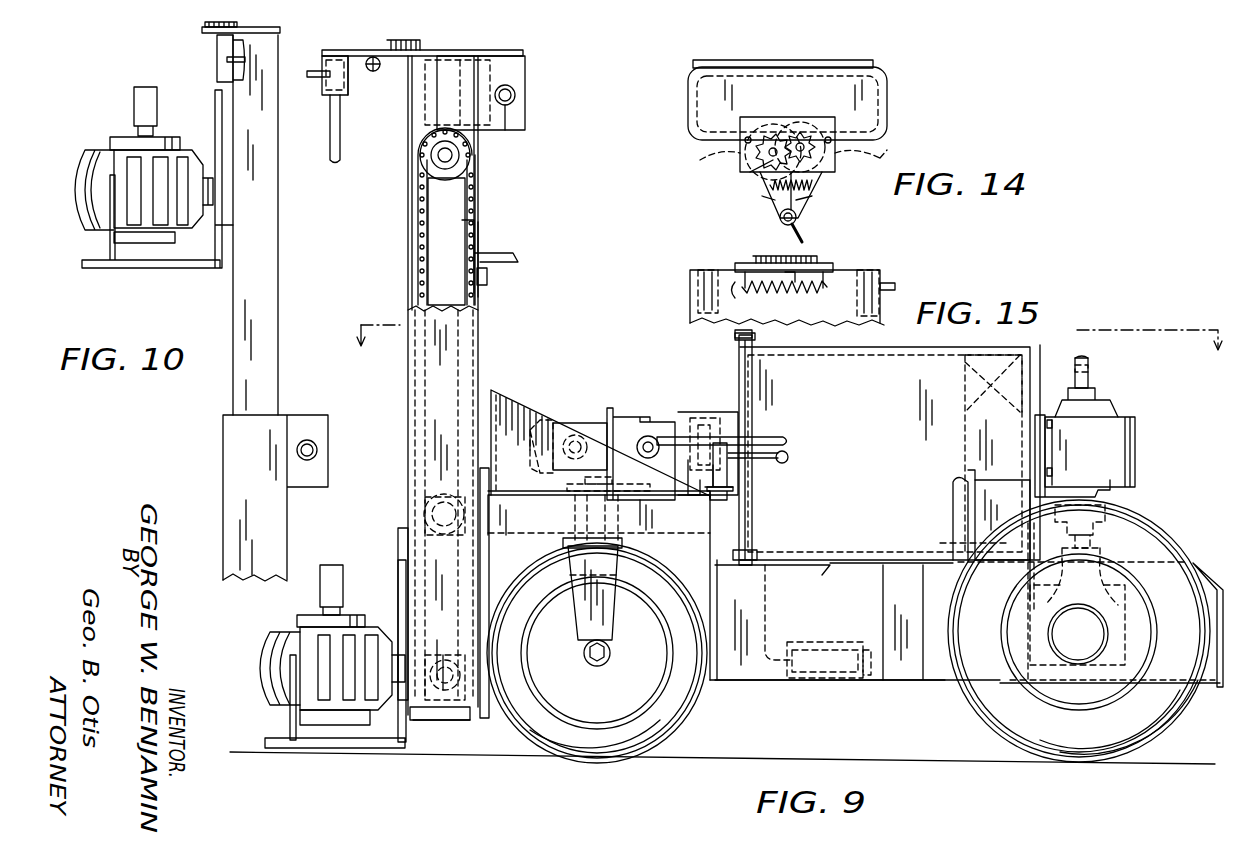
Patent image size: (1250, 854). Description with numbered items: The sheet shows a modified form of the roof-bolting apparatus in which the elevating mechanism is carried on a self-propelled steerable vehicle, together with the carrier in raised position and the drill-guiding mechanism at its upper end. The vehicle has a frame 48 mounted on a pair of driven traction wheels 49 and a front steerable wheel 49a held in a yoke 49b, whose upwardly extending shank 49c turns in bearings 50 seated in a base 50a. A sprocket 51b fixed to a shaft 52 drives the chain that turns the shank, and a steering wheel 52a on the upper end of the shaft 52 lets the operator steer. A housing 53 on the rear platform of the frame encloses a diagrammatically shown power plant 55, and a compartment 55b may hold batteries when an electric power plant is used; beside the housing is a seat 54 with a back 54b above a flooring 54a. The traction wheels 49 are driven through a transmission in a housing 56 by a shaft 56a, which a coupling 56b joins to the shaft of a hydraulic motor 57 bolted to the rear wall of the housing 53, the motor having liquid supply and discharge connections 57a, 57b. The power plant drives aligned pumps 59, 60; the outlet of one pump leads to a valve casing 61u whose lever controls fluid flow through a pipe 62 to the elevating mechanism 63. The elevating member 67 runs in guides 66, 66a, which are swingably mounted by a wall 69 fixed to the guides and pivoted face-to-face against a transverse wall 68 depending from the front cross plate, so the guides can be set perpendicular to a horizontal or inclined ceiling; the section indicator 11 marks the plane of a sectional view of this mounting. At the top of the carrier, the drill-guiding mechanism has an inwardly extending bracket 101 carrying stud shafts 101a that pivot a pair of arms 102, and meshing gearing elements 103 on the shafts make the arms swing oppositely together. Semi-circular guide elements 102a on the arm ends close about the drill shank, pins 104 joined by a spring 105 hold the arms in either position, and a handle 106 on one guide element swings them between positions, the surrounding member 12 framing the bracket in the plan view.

In FIG. 9, the section line 11- 11 is at (790, 354).
In FIG. 14, the handle 12 is at (872, 110).
In FIG. 9, the frame 48 is at (924, 685).
In FIG. 9, the traction wheels 49 is at (987, 724).
In FIG. 9, the front steerable wheel 49a is at (655, 723).
In FIG. 9, the yoke 49b is at (608, 643).
In FIG. 9, the shank 49c is at (599, 522).
In FIG. 9, the bearings 50 is at (548, 512).
In FIG. 9, the base 50a is at (520, 492).
In FIG. 9, the sprocket 51b is at (733, 490).
In FIG. 9, the shaft 52 is at (748, 586).
In FIG. 9, the steering wheel 52a is at (772, 438).
In FIG. 9, the housing 53 is at (1012, 392).
In FIG. 9, the seat 54 is at (900, 562).
In FIG. 9, the flooring 54a is at (735, 685).
In FIG. 9, the back 54b is at (952, 490).
In FIG. 9, the power plant 55 is at (1018, 357).
In FIG. 9, the compartment 55b is at (888, 688).
In FIG. 9, the housing 56 is at (1124, 587).
In FIG. 9, the shaft 56a is at (1085, 550).
In FIG. 9, the coupling 56b is at (1102, 503).
In FIG. 9, the motor 57 is at (1105, 445).
In FIG. 9, the liquid supply connection 57a is at (1089, 379).
In FIG. 9, the discharge connection 57b is at (1086, 362).
In FIG. 9, the pump 59 is at (643, 417).
In FIG. 9, the pump 60 is at (583, 421).
In FIG. 9, the upper lever housing 61u is at (708, 418).
In FIG. 9, the pipe 62 is at (478, 700).
In FIG. 9, the elevating mechanism 63 is at (396, 531).
In FIG. 10, the guides 66 is at (226, 473).
In FIG. 9, the guides 66 is at (470, 316).
In FIG. 10, the guide 66a is at (262, 374).
In FIG. 9, the guide 66a is at (440, 218).
In FIG. 9, the elevating member 67 is at (449, 503).
In FIG. 9, the transverse wall 68 is at (489, 528).
In FIG. 9, the wall 69 is at (480, 597).
In FIG. 10, the bracket 101 is at (262, 29).
In FIG. 14, the bracket 101 is at (806, 122).
In FIG. 9, the bracket 101 is at (430, 46).
In FIG. 14, the stud shafts 101a is at (765, 156).
In FIG. 15, the stud shafts 101a is at (808, 262).
In FIG. 14, the arms 102 is at (772, 204).
In FIG. 15, the arms 102 is at (700, 270).
In FIG. 9, the arms 102 is at (362, 50).
In FIG. 10, the guide elements 102a is at (217, 60).
In FIG. 14, the guide elements 102a is at (800, 222).
In FIG. 15, the guide elements 102a is at (879, 310).
In FIG. 9, the guide elements 102a is at (348, 90).
In FIG. 10, the gearing elements 103 is at (205, 23).
In FIG. 14, the gearing elements 103 is at (797, 133).
In FIG. 15, the gearing elements 103 is at (757, 258).
In FIG. 9, the gearing elements 103 is at (406, 40).
In FIG. 15, the pins 104 is at (738, 298).
In FIG. 14, the spring 105 is at (805, 189).
In FIG. 15, the spring 105 is at (800, 295).
In FIG. 9, the spring 105 is at (381, 67).
In FIG. 10, the handle 106 is at (227, 80).
In FIG. 14, the handle 106 is at (782, 224).
In FIG. 15, the handle 106 is at (894, 286).
In FIG. 9, the handle 106 is at (312, 78).